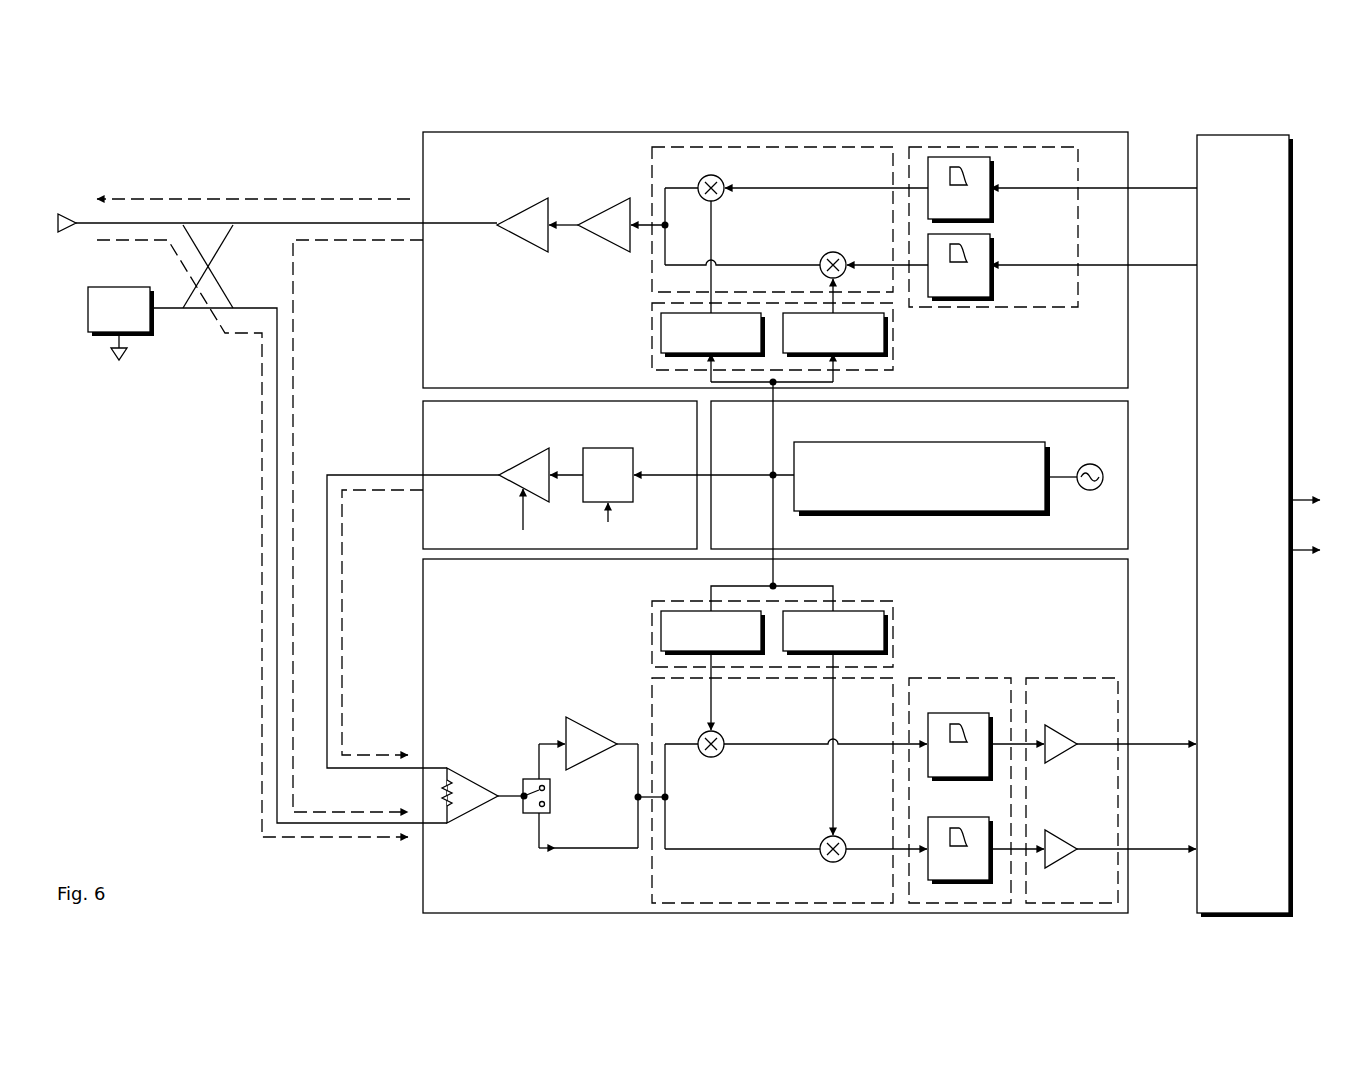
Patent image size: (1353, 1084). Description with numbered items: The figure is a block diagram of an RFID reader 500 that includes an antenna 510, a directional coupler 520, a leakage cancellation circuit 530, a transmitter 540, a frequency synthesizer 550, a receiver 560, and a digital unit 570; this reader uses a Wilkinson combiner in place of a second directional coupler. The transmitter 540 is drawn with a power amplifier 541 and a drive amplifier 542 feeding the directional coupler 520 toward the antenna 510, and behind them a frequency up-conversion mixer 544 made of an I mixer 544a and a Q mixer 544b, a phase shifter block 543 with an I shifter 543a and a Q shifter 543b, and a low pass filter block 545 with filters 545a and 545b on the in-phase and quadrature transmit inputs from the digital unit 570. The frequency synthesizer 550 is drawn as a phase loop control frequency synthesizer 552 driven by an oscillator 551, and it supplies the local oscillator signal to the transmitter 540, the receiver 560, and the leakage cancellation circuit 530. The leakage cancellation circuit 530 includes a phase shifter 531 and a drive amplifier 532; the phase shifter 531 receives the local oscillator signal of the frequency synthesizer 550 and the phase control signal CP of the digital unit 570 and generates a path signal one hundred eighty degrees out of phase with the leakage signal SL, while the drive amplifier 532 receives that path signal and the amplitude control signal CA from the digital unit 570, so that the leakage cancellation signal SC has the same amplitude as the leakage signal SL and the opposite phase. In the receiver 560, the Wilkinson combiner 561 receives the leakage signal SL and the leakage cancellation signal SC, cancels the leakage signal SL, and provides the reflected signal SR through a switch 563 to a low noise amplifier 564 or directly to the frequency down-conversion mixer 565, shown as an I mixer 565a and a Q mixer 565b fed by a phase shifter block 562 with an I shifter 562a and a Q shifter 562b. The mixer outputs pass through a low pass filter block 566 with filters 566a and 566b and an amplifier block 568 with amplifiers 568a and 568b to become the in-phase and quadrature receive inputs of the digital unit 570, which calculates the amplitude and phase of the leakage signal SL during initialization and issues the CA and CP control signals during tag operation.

The RFID reader 500 is at (355, 111).
The antenna 510 is at (68, 213).
The directional coupler 520 is at (211, 216).
The leakage cancellation circuit 530 is at (466, 432).
The phase shifter 531 is at (607, 447).
The drive amplifier 532 is at (527, 455).
The transmitter 540 is at (613, 164).
The power amplifier 541 is at (522, 251).
The drive amplifier 542 is at (602, 251).
The phase shifter unit 543 is at (893, 363).
The I shifter 543a is at (660, 333).
The Q shifter 543b is at (885, 333).
The frequency up-conversion mixer 544 is at (851, 146).
The I mixer 544a is at (722, 180).
The Q mixer 544b is at (822, 258).
The low pass filter unit 545 is at (1033, 146).
The low pass filter 545a is at (991, 205).
The low pass filter 545b is at (991, 283).
The frequency synthesizer 550 is at (753, 432).
The oscillator 551 is at (1090, 464).
The phase loop control frequency synthesizer 552 is at (990, 442).
The receiver 560 is at (580, 590).
The Wilkinson combiner 561 is at (477, 823).
The phase shifter unit 562 is at (893, 601).
The I shifter 562a is at (660, 633).
The Q shifter 562b is at (885, 633).
The switch 563 is at (533, 779).
The low noise amplifier 564 is at (594, 762).
The frequency down-conversion mixer 565 is at (652, 700).
The I mixer 565a is at (722, 735).
The Q mixer 565b is at (822, 840).
The low pass filter unit 566 is at (988, 678).
The low pass filter 566a is at (940, 713).
The low pass filter 566b is at (940, 817).
The amplifier unit 568 is at (1082, 678).
The amplifier 568a is at (1062, 740).
The amplifier 568b is at (1062, 845).
The digital unit 570 is at (1258, 135).